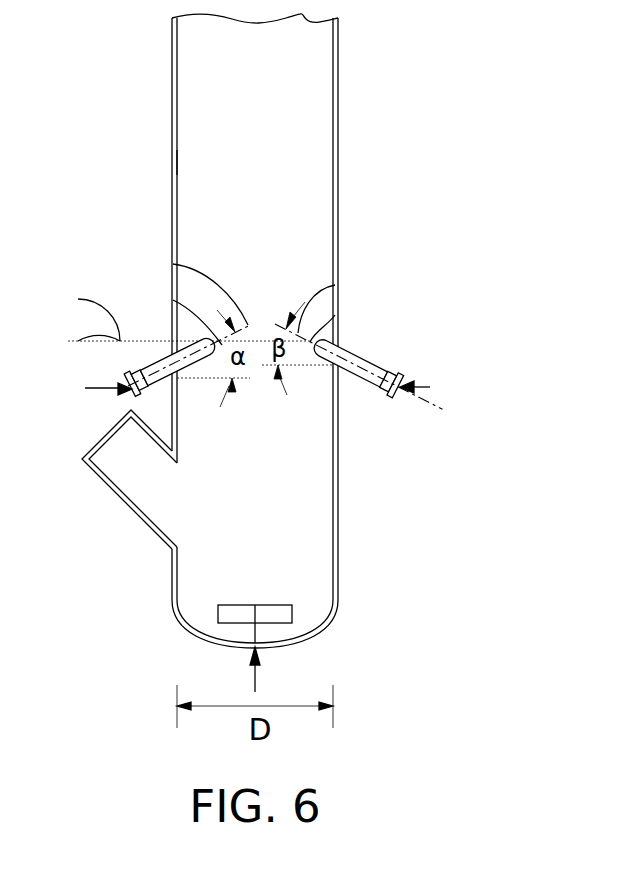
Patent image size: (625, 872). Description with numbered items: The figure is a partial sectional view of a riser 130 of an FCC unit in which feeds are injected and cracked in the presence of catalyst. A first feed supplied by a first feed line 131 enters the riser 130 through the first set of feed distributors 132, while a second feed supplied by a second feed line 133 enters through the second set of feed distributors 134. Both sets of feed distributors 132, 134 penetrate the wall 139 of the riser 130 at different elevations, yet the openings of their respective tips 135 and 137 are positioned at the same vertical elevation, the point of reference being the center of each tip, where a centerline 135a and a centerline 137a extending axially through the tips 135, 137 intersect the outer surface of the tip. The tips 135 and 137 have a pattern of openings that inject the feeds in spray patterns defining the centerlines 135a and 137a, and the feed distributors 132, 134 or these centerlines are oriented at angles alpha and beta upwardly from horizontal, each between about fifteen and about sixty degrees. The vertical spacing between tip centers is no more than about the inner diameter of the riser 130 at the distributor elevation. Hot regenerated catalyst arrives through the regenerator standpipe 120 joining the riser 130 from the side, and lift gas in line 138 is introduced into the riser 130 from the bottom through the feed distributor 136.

The regenerator standpipe 120 is at (132, 509).
The riser 130 is at (172, 116).
The wall 139 is at (177, 170).
The first feed line 131 is at (85, 388).
The first set of feed distributors 132 is at (143, 370).
The second feed line 133 is at (430, 387).
The second set of feed distributors 134 is at (373, 363).
The first distributor tip 135 is at (173, 299).
The centerline 135a is at (173, 263).
The second distributor tip 137 is at (335, 315).
The centerline 137a is at (335, 283).
The feed distributor 136 is at (218, 612).
The line 138 is at (257, 684).